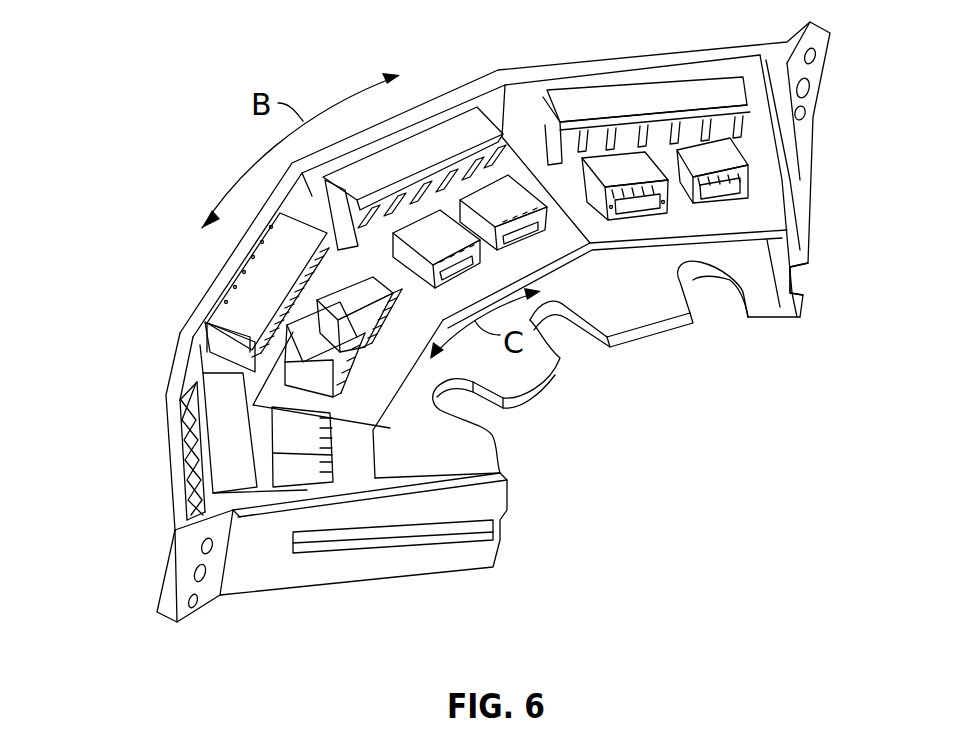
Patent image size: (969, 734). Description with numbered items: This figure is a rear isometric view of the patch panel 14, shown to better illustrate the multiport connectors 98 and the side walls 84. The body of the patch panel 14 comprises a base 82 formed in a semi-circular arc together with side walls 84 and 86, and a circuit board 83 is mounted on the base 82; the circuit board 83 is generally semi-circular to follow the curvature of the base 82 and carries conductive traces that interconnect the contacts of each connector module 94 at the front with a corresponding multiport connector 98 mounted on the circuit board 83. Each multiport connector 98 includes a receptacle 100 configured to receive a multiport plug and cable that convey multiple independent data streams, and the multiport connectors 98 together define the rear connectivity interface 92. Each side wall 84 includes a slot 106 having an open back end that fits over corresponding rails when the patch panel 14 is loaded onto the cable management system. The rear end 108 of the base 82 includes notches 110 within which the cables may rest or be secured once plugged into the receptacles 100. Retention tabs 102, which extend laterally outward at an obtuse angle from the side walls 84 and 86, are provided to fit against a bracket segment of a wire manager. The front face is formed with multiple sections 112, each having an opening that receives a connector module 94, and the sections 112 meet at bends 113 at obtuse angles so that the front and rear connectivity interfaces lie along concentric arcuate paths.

The patch panel 14 is at (116, 186).
The base 82 is at (616, 326).
The circuit board 83 is at (760, 143).
The side wall 84 is at (802, 304).
The side wall 86 is at (262, 578).
The rear connectivity interface 92 is at (515, 373).
The connector module 94 is at (243, 297).
The multiport connector 98 is at (743, 157).
The receptacle 100 is at (752, 192).
The retention tab 102 is at (188, 610).
The slot 106 is at (803, 276).
The rear end 108 is at (493, 450).
The notch 110 is at (724, 326).
The section 112 is at (135, 355).
The bend 113 is at (527, 100).